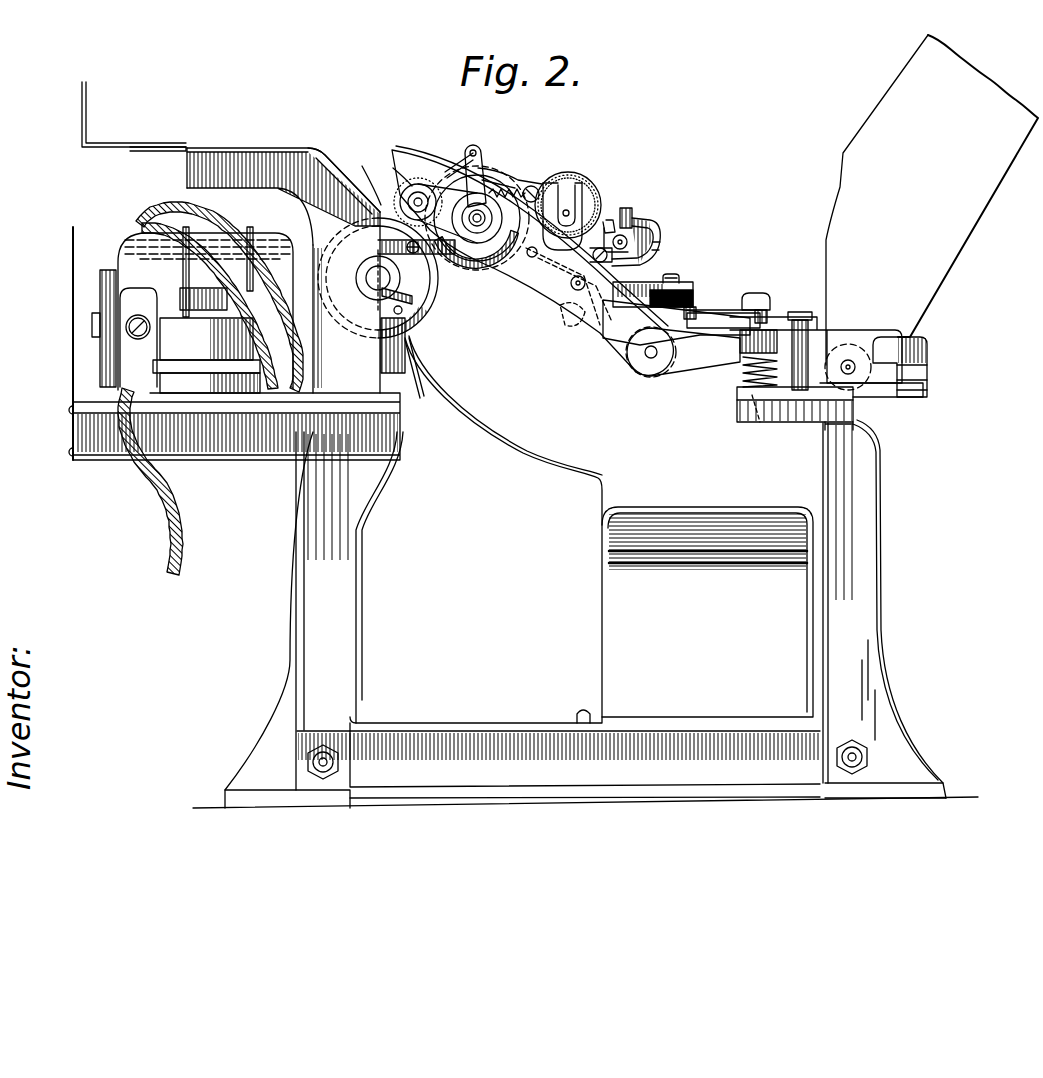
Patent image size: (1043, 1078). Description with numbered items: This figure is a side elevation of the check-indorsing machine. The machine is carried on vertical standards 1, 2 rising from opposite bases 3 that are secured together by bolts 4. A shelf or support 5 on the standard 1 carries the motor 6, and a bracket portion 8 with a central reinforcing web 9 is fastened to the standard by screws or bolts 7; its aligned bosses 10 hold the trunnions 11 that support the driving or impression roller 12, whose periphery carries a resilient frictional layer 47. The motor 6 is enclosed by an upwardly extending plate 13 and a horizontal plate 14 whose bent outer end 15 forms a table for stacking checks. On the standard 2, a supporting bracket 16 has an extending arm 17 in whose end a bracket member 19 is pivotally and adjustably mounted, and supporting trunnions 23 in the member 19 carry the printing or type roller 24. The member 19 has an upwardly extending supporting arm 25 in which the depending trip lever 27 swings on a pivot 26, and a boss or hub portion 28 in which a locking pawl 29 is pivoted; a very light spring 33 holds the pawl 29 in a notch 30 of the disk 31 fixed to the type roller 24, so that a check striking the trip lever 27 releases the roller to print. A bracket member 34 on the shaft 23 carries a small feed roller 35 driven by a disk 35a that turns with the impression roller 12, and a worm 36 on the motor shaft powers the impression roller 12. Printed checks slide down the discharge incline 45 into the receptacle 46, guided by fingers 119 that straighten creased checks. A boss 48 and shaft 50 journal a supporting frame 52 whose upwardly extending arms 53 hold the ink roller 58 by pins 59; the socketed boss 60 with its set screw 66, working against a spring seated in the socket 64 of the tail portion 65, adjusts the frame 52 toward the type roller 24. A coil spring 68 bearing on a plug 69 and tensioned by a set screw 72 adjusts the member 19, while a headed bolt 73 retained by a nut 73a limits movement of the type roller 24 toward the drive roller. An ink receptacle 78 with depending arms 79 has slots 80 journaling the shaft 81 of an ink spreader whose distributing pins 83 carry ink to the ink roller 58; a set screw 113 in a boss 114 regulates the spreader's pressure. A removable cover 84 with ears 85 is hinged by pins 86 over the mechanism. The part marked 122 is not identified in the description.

The vertical standard 1 is at (303, 618).
The vertical standard 2 is at (860, 603).
The base 3 is at (492, 770).
The bolt 4 is at (323, 760).
The shelf or support 5 is at (160, 407).
The motor 6 is at (132, 248).
The screws or bolts 7 is at (308, 386).
The bracket portion 8 is at (325, 214).
The central reinforcing web 9 is at (266, 172).
The aligned bosses 10 is at (380, 222).
The trunnion 11 is at (405, 312).
The driving or impression roller 12 is at (408, 338).
The upwardly extending plate 13 is at (70, 320).
The horizontal plate 14 is at (152, 158).
The upwardly bent outer end 15 is at (80, 114).
The supporting bracket 16 is at (828, 396).
The extending arm 17 is at (703, 362).
The bracket member 19 is at (560, 295).
The supporting trunnion 23 is at (479, 250).
The printing or type roller 24 is at (495, 180).
The upwardly extending supporting arm 25 is at (483, 160).
The pivot 26 is at (472, 146).
The depending trip lever 27 is at (462, 172).
The boss or hub portion 28 is at (530, 258).
The locking pawl 29 is at (540, 182).
The notch or recess 30 is at (518, 180).
The disk 31 is at (487, 236).
The spring 33 is at (580, 187).
The bracket member 34 is at (422, 252).
The feed roller 35 is at (392, 164).
The disk 35a is at (358, 171).
The worm 36 is at (414, 385).
The discharge incline 45 is at (538, 457).
The receptacle 46 is at (700, 517).
The resilient frictional layer 47 is at (414, 300).
The boss 48 is at (567, 303).
The shaft 50 is at (581, 291).
The supporting frame 52 is at (648, 284).
The upwardly extending arm 53 is at (615, 218).
The ink roller 58 is at (600, 194).
The pin 59 is at (603, 180).
The socketed boss 60 is at (693, 292).
The socket 64 is at (700, 310).
The rearwardly extending tail portion 65 is at (793, 320).
The set screw 66 is at (680, 279).
The coil spring 68 is at (800, 338).
The plug 69 is at (745, 400).
The set screw 72 is at (772, 308).
The headed bolt 73 is at (806, 347).
The nut 73a is at (800, 408).
The ink receptacle 78 is at (661, 245).
The depending arm 79 is at (632, 335).
The slot 80 is at (626, 236).
The shaft of ink spreader 81 is at (661, 243).
The ink distributing pin 83 is at (636, 213).
The housing or cover 84 is at (932, 200).
The ear 85 is at (910, 367).
The pin 86 is at (908, 388).
The set screw 113 is at (612, 256).
The boss 114 is at (670, 358).
The guide member or finger 119 is at (378, 278).
The frame arm extension 122 is at (323, 156).